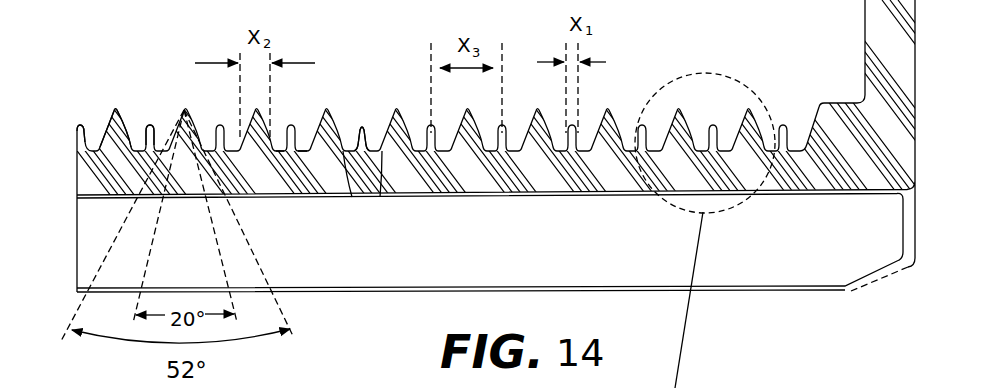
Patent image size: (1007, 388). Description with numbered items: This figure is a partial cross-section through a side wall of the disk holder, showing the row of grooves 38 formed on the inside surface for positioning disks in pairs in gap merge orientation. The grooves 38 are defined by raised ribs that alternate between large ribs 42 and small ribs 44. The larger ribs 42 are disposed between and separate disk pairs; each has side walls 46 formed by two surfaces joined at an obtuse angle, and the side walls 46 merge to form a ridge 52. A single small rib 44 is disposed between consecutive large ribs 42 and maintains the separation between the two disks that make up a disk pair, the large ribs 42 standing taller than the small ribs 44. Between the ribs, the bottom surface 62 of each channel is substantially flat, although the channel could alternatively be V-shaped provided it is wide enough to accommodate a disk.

The grooves 38 is at (302, 132).
The large raised ribs 42 is at (112, 125).
The small raised ribs 44 is at (361, 124).
The side walls 46 is at (124, 130).
The ridge 52 is at (367, 136).
The bottom surface 62 is at (352, 197).